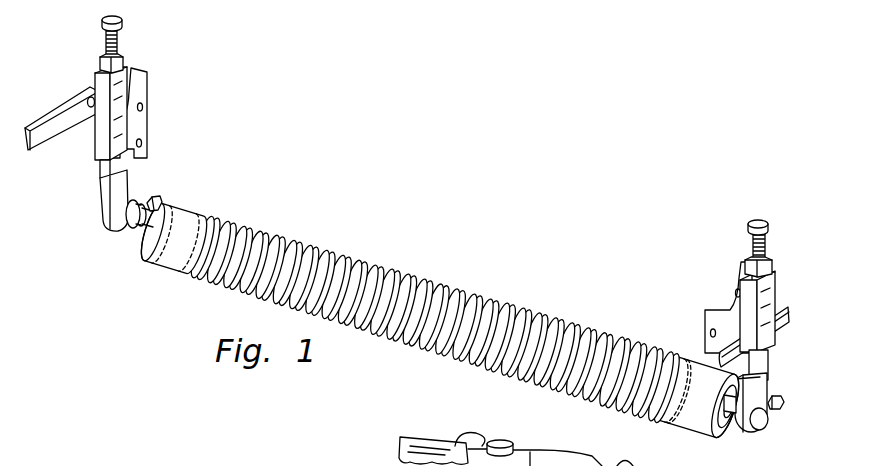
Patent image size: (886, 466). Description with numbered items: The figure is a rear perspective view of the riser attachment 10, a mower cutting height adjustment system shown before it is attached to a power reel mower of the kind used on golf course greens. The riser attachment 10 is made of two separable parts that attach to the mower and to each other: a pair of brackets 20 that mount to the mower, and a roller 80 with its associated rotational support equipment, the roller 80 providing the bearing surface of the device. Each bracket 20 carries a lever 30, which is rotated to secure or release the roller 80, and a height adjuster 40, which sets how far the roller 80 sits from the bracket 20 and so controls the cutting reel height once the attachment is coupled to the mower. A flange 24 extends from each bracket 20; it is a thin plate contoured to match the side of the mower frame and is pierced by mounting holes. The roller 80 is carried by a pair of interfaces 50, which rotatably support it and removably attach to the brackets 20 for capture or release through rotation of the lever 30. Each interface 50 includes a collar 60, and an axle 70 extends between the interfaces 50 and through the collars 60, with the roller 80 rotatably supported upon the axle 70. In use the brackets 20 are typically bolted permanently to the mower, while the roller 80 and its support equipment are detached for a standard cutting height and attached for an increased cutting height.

The riser attachment 10 is at (160, 312).
The bracket 20 is at (130, 64).
The flange 24 is at (147, 118).
The lever 30 is at (70, 113).
The height adjuster 40 is at (118, 42).
The interface 50 is at (103, 208).
The collar 60 is at (128, 233).
The axle 70 is at (143, 235).
The roller 80 is at (354, 262).